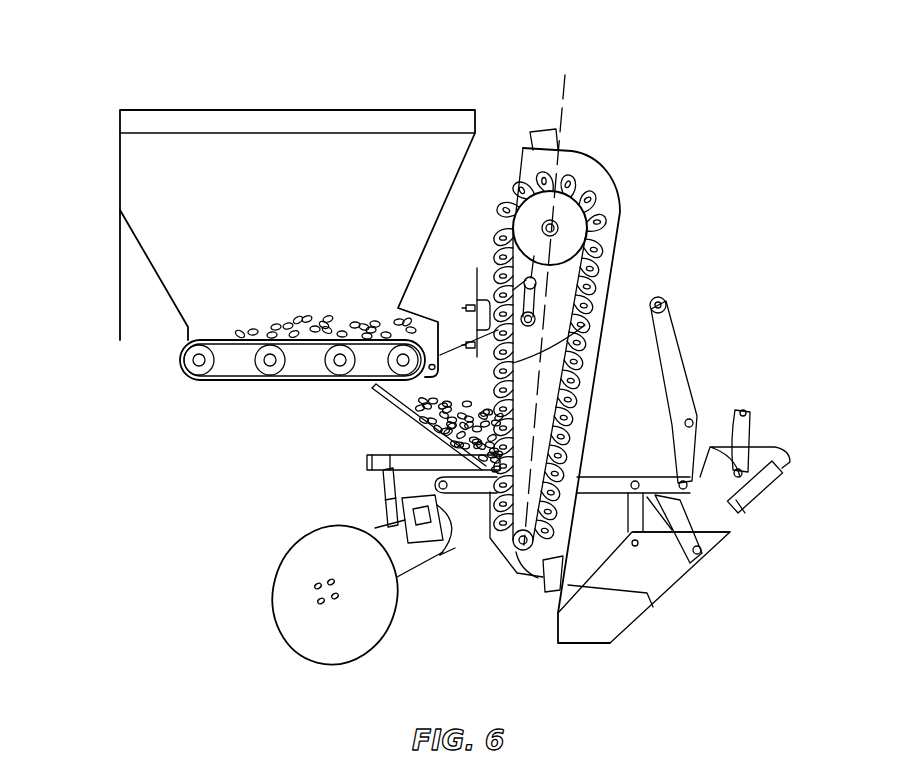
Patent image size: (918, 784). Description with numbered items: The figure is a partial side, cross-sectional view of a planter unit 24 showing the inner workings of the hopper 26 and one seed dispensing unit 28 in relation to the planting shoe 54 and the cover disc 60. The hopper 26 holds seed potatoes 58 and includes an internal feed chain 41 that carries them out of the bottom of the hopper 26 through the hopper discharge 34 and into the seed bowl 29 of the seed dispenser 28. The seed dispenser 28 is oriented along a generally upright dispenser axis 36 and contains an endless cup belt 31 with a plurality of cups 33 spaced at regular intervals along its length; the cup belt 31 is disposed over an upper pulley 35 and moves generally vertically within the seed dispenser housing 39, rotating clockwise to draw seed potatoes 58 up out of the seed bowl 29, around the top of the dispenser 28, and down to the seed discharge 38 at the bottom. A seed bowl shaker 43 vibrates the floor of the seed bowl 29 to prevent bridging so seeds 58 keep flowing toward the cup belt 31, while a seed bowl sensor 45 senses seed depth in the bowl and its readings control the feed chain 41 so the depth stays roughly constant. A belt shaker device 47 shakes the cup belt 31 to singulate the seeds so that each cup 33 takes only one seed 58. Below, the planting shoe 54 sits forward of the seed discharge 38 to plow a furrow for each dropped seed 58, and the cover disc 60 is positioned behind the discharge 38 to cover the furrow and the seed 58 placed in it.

The seed planter unit 24 is at (659, 113).
The hopper 26 is at (158, 173).
The seed dispensing unit 28 is at (596, 172).
The seed bowl 29 is at (415, 404).
The cup belt 31 is at (604, 320).
The cups 33 is at (503, 250).
The hopper discharge 34 is at (420, 327).
The upper pulley 35 is at (560, 226).
The dispenser axis 36 is at (566, 97).
The seed discharge 38 is at (506, 591).
The seed dispenser housing 39 is at (577, 153).
The feed chain 41 is at (250, 342).
The seed bowl shaker 43 is at (430, 447).
The seed bowl sensor 45 is at (463, 340).
The belt shaker device 47 is at (535, 298).
The planting shoe 54 is at (653, 583).
The seed potatoes 58 is at (331, 318).
The cover disc 60 is at (292, 612).